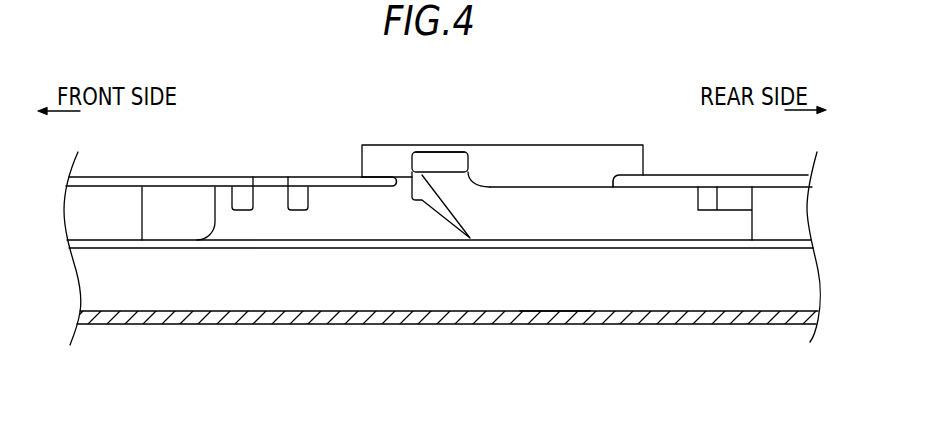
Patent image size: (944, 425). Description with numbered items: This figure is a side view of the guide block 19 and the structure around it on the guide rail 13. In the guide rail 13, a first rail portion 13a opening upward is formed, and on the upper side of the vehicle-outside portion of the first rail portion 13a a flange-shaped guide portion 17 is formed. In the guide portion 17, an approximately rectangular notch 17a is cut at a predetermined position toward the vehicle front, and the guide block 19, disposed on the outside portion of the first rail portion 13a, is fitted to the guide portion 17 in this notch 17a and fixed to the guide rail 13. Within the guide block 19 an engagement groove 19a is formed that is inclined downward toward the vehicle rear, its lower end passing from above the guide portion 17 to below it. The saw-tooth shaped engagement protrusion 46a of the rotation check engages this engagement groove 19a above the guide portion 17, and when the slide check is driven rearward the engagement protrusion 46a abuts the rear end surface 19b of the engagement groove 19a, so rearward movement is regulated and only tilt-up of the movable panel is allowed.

The guide rail 13 is at (350, 326).
The first rail portion 13a is at (553, 308).
The guide portion 17 is at (707, 175).
The notch 17a is at (403, 172).
The guide block 19 is at (601, 143).
The engagement groove 19a is at (457, 208).
The rear end surface 19b is at (470, 155).
The engagement protrusion 46a is at (432, 152).